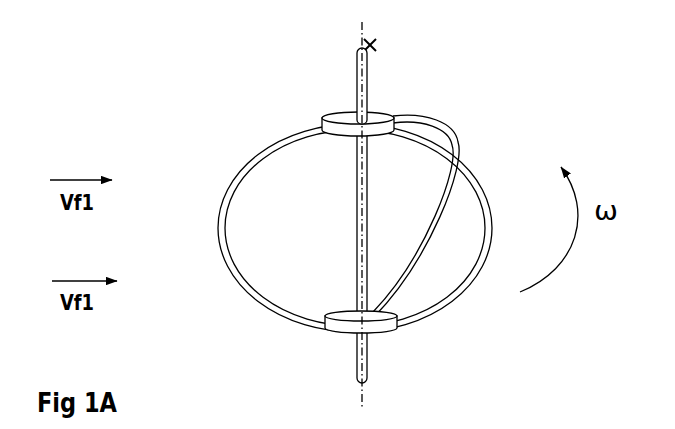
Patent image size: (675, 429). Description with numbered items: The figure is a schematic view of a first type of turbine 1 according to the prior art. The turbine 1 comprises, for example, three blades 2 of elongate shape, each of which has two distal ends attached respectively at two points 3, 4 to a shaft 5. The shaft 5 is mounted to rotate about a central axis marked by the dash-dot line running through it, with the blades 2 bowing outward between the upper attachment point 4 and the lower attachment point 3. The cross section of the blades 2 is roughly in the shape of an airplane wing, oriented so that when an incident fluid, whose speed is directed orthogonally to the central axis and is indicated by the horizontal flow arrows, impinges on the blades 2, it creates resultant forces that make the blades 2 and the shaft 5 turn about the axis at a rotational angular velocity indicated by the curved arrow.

The turbine 1 is at (246, 135).
The blades 2 is at (477, 284).
The attachment point 3 is at (353, 321).
The attachment point 4 is at (379, 116).
The shaft 5 is at (351, 208).